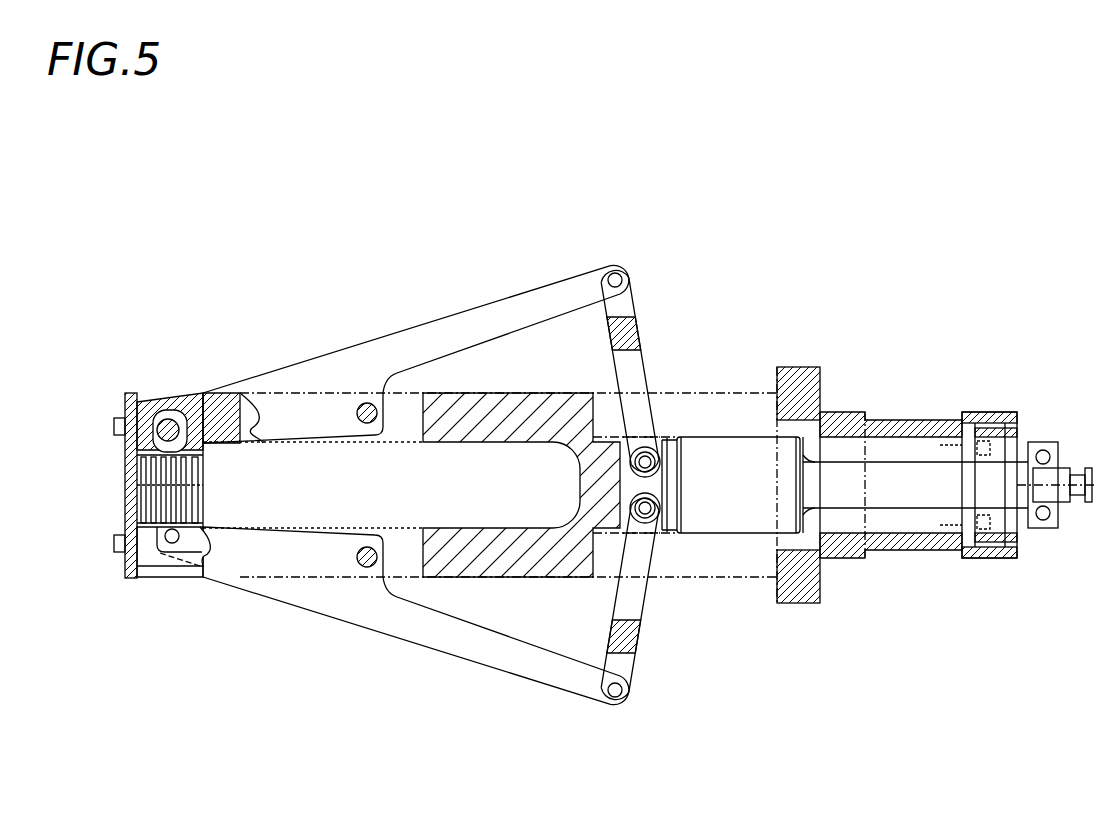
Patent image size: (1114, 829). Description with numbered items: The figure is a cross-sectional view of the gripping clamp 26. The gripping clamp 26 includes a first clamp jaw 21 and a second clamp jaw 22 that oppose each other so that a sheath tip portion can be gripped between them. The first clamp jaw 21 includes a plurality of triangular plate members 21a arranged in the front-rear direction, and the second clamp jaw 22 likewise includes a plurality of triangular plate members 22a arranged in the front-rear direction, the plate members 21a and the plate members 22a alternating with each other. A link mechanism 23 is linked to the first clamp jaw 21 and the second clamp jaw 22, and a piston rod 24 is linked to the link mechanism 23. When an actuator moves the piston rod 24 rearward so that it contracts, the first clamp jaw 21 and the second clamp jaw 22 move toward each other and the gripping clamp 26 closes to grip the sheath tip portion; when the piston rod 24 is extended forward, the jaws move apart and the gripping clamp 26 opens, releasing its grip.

The gripping clamp 26 is at (297, 250).
The first clamp jaw 21 is at (207, 473).
The triangular plate members 21a is at (147, 457).
The second clamp jaw 22 is at (131, 503).
The triangular plate members 22a is at (153, 507).
The link mechanism 23 is at (497, 300).
The piston rod 24 is at (717, 437).